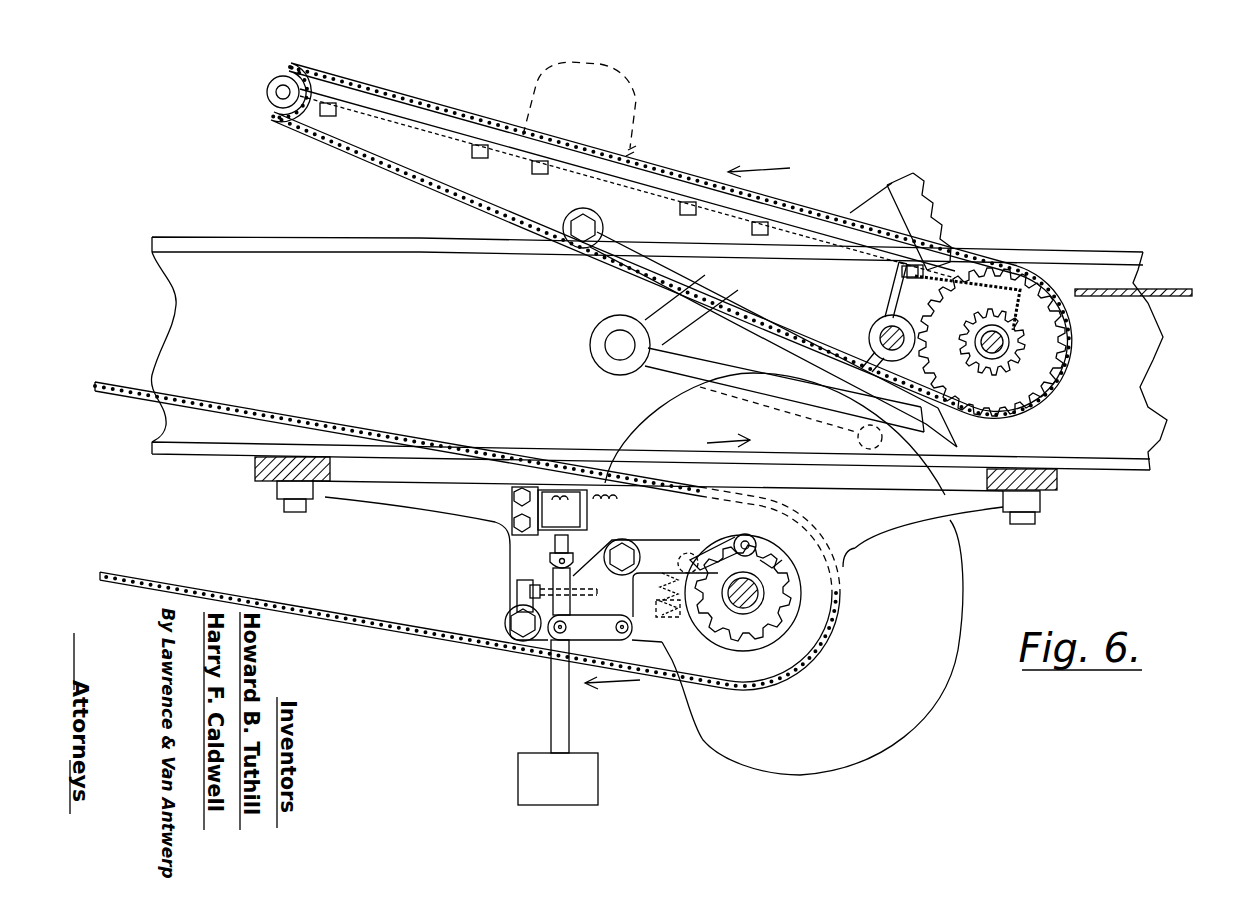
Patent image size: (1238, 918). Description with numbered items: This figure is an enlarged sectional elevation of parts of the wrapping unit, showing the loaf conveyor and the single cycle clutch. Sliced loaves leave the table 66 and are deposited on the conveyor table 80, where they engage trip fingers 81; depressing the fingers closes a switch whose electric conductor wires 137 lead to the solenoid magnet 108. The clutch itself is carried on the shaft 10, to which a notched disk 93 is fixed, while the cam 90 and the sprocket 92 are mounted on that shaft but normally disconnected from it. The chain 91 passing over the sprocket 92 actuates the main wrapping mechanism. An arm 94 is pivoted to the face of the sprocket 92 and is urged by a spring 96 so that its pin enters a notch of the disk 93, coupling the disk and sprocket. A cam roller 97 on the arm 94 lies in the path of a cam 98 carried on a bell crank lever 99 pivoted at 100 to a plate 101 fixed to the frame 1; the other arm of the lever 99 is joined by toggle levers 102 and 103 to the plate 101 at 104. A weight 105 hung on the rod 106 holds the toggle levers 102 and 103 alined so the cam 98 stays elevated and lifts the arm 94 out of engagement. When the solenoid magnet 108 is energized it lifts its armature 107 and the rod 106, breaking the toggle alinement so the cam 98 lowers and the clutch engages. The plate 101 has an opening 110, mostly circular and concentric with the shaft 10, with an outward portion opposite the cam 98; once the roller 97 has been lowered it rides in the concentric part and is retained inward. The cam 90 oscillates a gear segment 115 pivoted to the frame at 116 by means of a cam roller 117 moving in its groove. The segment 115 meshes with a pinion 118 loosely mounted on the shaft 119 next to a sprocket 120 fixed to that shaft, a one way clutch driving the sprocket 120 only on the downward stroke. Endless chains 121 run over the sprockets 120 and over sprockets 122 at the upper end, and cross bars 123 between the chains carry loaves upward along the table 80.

The frame 1 is at (308, 262).
The shaft 10 is at (758, 593).
The table 66 is at (1168, 290).
The conveyor table 80 is at (635, 190).
The trip fingers 81 is at (940, 238).
The cam 90 is at (935, 545).
The chain 91 is at (240, 405).
The sprocket 92 is at (686, 682).
The notched disk 93 is at (770, 632).
The arm 94 is at (728, 545).
The spring 96 is at (674, 620).
The cam roller 97 is at (755, 543).
The cam 98 is at (772, 570).
The bell crank lever 99 is at (651, 553).
The pivot 100 is at (619, 553).
The plate 101 is at (428, 500).
The toggle lever 102 is at (598, 626).
The toggle lever 103 is at (545, 642).
The connection point 104 is at (520, 622).
The weight 105 is at (555, 772).
The rod 106 is at (560, 706).
The armature 107 is at (556, 548).
The solenoid magnet 108 is at (555, 512).
The opening 110 is at (800, 643).
The gear segment 115 is at (906, 192).
The pivot 116 is at (614, 345).
The cam roller 117 is at (858, 440).
The pinion 118 is at (1008, 345).
The shaft 119 is at (996, 345).
The sprocket 120 is at (1040, 358).
The endless chains 121 is at (458, 106).
The sprocket 122 is at (268, 88).
The cross bars 123 is at (283, 121).
The electric conductor wires 137 is at (568, 503).